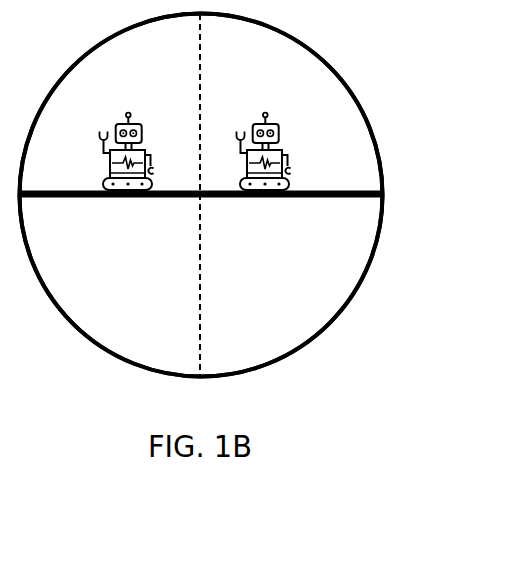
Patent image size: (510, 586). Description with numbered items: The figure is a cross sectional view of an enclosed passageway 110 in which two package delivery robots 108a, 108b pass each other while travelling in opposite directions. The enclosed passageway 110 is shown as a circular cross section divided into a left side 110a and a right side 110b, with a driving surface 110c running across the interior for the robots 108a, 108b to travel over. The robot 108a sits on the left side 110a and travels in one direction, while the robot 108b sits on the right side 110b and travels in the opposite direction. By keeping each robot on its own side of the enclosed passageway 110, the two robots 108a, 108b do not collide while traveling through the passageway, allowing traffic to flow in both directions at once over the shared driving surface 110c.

The enclosed passageway 110 is at (226, 195).
The left side 110a is at (158, 74).
The right side 110b is at (297, 74).
The driving surface 110c is at (235, 161).
The package delivery robot 108a is at (103, 176).
The package delivery robot 108b is at (287, 176).